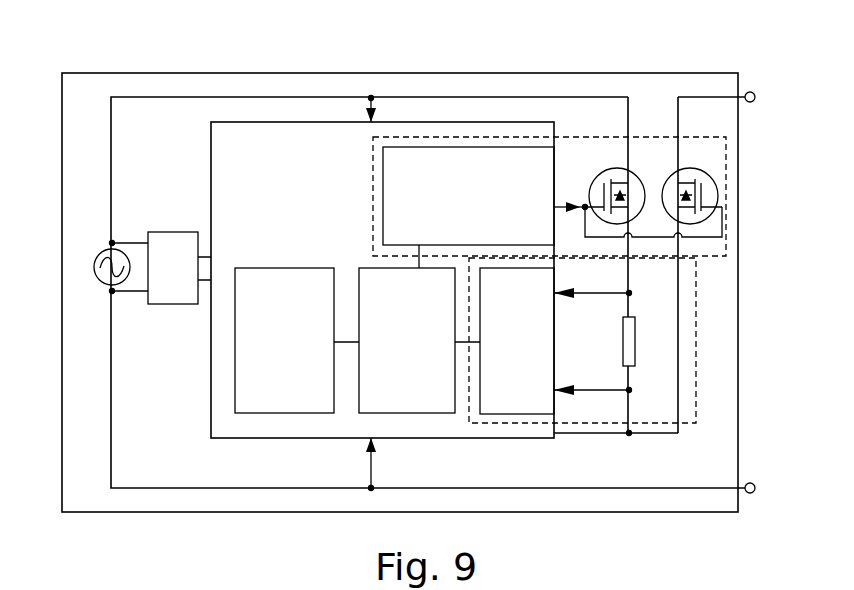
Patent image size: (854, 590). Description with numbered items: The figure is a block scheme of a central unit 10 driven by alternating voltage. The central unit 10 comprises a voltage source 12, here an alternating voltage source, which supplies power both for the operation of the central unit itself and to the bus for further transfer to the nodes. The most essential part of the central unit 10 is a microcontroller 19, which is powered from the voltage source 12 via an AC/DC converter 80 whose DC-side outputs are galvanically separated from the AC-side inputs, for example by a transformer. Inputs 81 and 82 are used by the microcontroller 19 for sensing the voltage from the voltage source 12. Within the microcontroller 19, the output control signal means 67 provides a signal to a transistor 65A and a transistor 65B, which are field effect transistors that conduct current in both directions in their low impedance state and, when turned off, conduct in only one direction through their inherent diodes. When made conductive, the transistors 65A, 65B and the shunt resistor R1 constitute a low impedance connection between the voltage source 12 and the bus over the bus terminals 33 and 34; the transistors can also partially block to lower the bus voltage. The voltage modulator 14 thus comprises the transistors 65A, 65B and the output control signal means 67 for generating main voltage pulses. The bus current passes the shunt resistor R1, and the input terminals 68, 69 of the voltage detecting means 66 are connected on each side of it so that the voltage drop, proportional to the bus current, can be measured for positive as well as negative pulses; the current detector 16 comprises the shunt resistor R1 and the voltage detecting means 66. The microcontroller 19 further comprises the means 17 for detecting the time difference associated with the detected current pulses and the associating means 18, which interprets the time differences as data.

The central unit 10 is at (708, 72).
The voltage source 12 is at (94, 262).
The voltage modulator 14 is at (578, 146).
The current detector 16 is at (528, 424).
The means for detecting the time difference 17 is at (367, 278).
The associating means 18 is at (248, 275).
The microcontroller 19 is at (220, 410).
The bus terminal 33 is at (753, 92).
The bus terminal 34 is at (753, 494).
The transistor 65A is at (636, 186).
The transistor 65B is at (710, 193).
The voltage detecting means 66 is at (483, 418).
The output control signal means 67 is at (392, 172).
The input terminal 68 is at (615, 296).
The input terminal 69 is at (610, 398).
The AC/DC converter 80 is at (178, 304).
The input 81 is at (372, 98).
The input 82 is at (370, 465).
The shunt resistor R1 is at (636, 342).